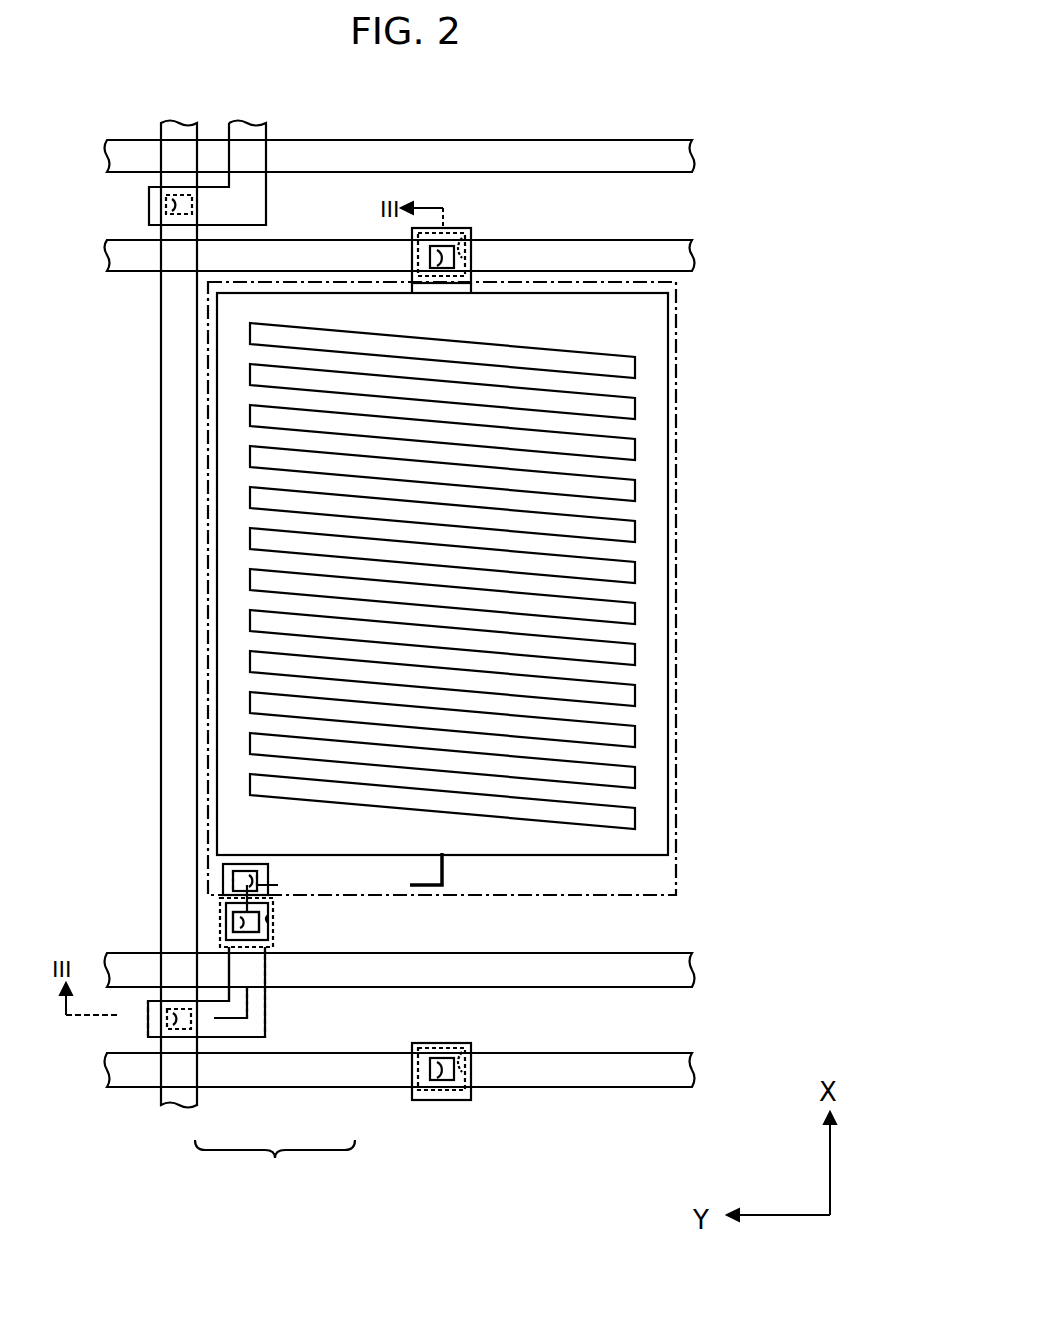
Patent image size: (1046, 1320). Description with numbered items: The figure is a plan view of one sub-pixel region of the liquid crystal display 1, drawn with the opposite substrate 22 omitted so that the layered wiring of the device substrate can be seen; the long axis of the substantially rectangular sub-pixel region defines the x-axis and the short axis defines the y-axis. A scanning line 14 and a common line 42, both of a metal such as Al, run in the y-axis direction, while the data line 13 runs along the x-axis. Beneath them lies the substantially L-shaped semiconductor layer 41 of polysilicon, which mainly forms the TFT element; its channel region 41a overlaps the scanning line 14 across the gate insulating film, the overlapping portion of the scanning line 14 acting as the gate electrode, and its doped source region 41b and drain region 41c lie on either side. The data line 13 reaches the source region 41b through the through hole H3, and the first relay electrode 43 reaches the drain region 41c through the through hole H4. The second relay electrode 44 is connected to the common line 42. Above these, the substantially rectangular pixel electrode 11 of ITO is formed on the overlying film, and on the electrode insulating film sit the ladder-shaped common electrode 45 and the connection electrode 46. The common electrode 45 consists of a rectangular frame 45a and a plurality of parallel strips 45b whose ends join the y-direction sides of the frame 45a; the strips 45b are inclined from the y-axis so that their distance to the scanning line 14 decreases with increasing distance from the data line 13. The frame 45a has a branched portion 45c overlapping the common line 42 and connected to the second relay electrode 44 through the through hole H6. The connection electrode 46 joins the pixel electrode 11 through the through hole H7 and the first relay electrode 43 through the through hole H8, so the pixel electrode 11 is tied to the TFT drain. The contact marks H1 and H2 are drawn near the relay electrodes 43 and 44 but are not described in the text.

The liquid crystal display 1 is at (698, 105).
The pixel electrode 11 is at (660, 872).
The data line 13 is at (168, 770).
The scanning line 14 is at (692, 156).
The opposite substrate 22 is at (228, 1045).
The semiconductor layer 41 is at (285, 193).
The channel region 41a is at (258, 990).
The source region 41b is at (196, 1037).
The drain region 41c is at (265, 955).
The common line 42 is at (692, 256).
The first relay electrode 43 is at (228, 926).
The second relay electrode 44 is at (413, 636).
The common electrode 45 is at (535, 623).
The frame 45a is at (605, 329).
The strips 45b is at (592, 381).
The branched portion 45c is at (468, 252).
The connection electrode 46 is at (217, 863).
The contact hole H1 is at (275, 918).
The contact hole H2 is at (462, 250).
The through hole H3 is at (172, 206).
The through hole H4 is at (235, 920).
The through hole H6 is at (415, 248).
The through hole H7 is at (260, 870).
The through hole H8 is at (246, 922).